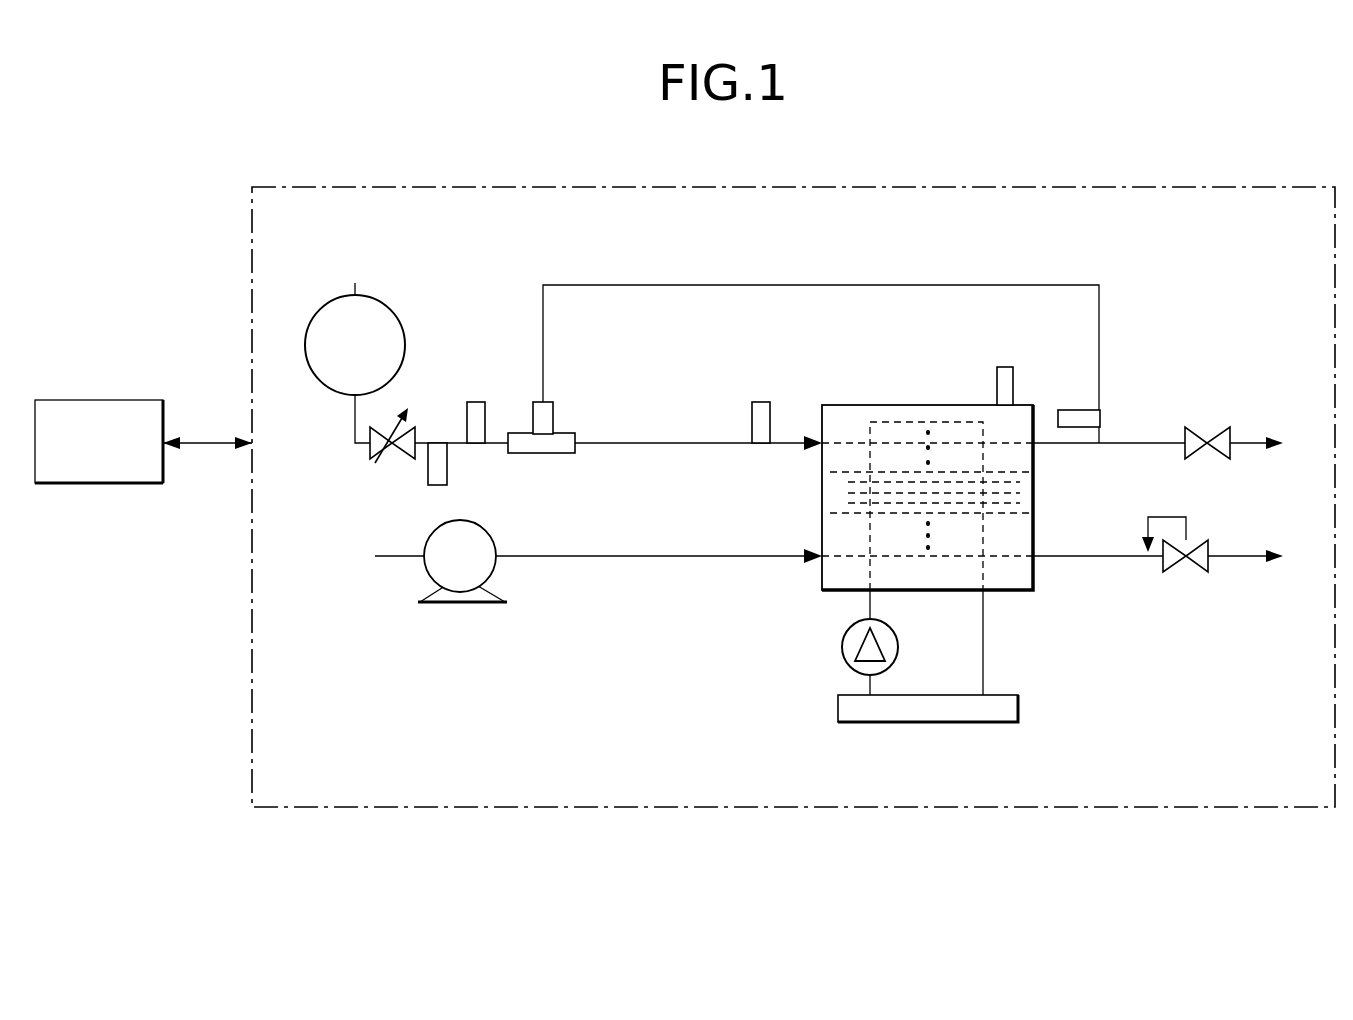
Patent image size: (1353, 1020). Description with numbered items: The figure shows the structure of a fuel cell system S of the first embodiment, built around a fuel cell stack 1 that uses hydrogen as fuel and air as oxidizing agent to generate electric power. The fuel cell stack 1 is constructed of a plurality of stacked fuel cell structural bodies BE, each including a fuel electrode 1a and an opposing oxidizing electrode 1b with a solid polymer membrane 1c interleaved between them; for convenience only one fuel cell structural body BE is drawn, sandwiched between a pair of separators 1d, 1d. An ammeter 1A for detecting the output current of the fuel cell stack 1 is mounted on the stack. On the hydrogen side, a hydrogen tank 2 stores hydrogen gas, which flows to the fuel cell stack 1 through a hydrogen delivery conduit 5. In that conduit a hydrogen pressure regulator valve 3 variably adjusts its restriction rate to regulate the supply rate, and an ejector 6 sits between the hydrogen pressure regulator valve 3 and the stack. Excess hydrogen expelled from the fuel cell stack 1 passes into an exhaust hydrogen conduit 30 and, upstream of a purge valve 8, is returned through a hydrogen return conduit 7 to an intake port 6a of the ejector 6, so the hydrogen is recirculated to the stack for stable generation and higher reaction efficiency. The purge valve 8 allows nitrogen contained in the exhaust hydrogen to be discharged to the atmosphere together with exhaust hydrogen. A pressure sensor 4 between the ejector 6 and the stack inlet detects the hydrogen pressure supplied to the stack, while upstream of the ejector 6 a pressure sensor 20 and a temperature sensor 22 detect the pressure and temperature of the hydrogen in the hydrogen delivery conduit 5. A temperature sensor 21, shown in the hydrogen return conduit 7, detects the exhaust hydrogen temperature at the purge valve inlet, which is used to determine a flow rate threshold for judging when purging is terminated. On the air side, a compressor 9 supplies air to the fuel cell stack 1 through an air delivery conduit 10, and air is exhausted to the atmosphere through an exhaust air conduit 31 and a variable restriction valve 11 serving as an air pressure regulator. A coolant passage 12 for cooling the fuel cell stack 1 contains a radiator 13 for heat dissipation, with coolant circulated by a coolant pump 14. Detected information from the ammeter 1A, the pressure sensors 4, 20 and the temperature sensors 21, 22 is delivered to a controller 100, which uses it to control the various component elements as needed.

The fuel cell system S is at (886, 154).
The controller 100 is at (98, 400).
The fuel cell stack 1 is at (948, 456).
The ammeter 1A is at (1005, 367).
The fuel electrode 1a is at (1020, 482).
The oxidizing electrode 1b is at (965, 524).
The solid polymer membrane 1c is at (1020, 493).
The separator 1d is at (835, 514).
The fuel cell structural body BE is at (999, 497).
The hydrogen tank 2 is at (355, 283).
The hydrogen pressure regulator valve 3 is at (373, 460).
The pressure sensor 4 is at (760, 402).
The hydrogen delivery conduit 5 is at (655, 443).
The ejector 6 is at (547, 397).
The intake port 6a is at (543, 402).
The hydrogen return conduit 7 is at (920, 285).
The purge valve 8 is at (1228, 452).
The compressor 9 is at (497, 568).
The air delivery conduit 10 is at (625, 557).
The variable restriction valve 11 is at (1186, 572).
The coolant passage 12 is at (983, 655).
The radiator 13 is at (958, 722).
The coolant pump 14 is at (842, 647).
The pressure sensor 20 is at (475, 402).
The temperature sensor 21 is at (1085, 410).
The temperature sensor 22 is at (447, 465).
The exhaust hydrogen conduit 30 is at (1157, 443).
The exhaust air conduit 31 is at (1075, 557).